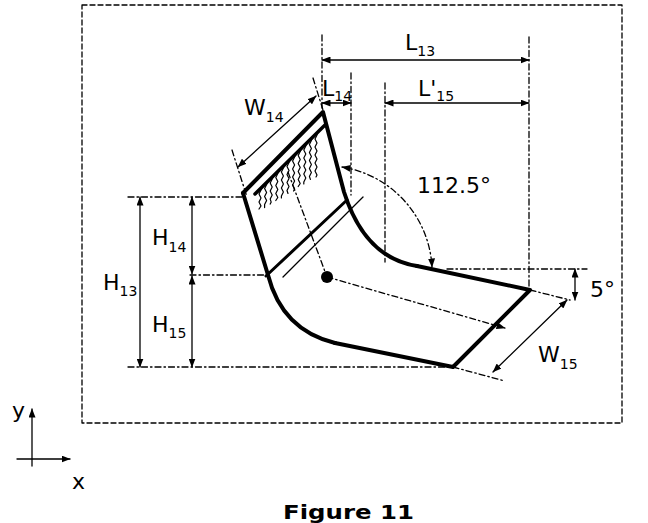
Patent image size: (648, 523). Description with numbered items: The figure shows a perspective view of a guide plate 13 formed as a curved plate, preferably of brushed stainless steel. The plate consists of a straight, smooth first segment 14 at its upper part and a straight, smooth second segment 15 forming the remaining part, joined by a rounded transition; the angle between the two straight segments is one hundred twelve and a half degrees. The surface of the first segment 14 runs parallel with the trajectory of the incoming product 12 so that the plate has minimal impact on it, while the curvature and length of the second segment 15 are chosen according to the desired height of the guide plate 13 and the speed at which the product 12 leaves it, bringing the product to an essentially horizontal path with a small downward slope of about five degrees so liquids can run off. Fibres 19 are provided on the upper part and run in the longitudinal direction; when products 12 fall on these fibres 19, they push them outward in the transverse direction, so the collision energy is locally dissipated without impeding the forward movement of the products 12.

The incoming product 12 is at (328, 283).
The guide plate 13 is at (497, 424).
The first segment 14 is at (287, 254).
The second segment 15 is at (457, 357).
The fibres 19 is at (262, 208).